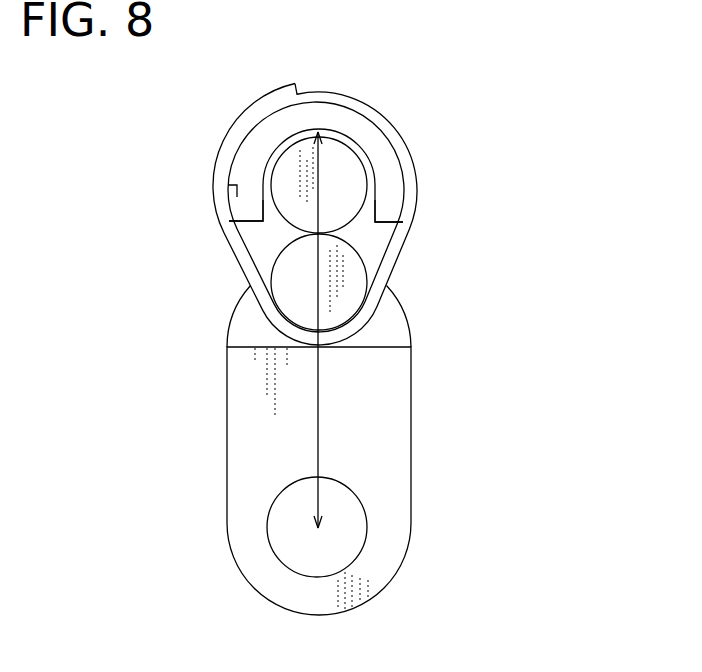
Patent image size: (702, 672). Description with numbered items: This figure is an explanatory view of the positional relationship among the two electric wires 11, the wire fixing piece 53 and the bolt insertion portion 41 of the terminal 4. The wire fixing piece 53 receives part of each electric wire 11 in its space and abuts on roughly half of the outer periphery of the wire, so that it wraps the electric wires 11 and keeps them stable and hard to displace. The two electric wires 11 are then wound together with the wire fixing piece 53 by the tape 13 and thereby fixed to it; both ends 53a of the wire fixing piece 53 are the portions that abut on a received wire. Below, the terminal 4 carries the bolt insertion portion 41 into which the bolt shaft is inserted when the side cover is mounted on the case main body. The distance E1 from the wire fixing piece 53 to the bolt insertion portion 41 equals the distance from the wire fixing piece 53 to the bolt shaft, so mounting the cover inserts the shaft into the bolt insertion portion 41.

The tape 13 is at (392, 127).
The wire fixing piece 53 is at (392, 168).
The ends of the wire fixing piece 53a is at (247, 200).
The electric wire 11 is at (347, 202).
The terminal 4 is at (412, 406).
The bolt insertion portion 41 is at (365, 542).
The distance E1 is at (322, 395).